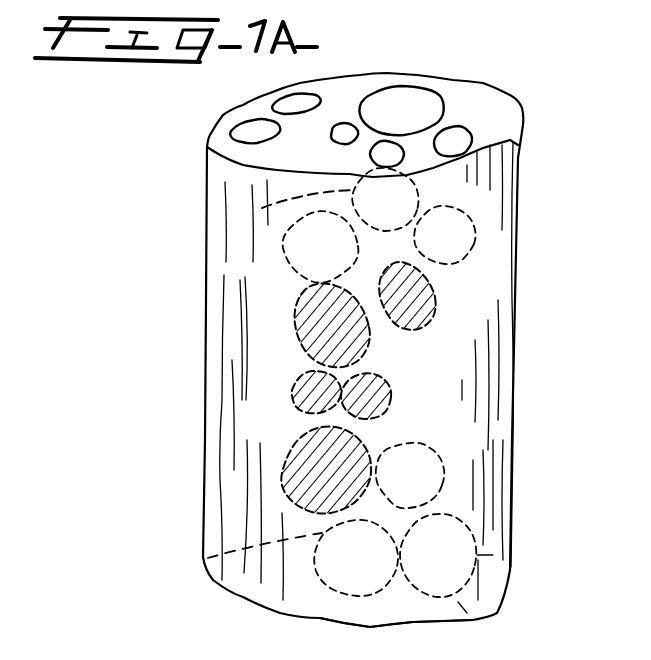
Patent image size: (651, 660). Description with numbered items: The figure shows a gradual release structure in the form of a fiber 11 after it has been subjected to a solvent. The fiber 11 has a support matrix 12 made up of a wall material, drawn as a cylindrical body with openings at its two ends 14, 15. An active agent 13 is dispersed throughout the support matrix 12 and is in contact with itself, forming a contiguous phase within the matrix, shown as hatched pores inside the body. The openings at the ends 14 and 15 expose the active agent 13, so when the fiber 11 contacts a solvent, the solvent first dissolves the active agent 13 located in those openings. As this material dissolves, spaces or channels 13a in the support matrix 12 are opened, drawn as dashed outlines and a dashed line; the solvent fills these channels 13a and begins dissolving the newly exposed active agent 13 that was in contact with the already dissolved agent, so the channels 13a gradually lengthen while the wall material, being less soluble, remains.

The fiber 11 is at (321, 348).
The support matrix 12 is at (521, 156).
The active agent 13 is at (432, 293).
The channels 13a is at (257, 208).
The end of the support matrix 14 is at (402, 638).
The end of the support matrix 15 is at (403, 74).